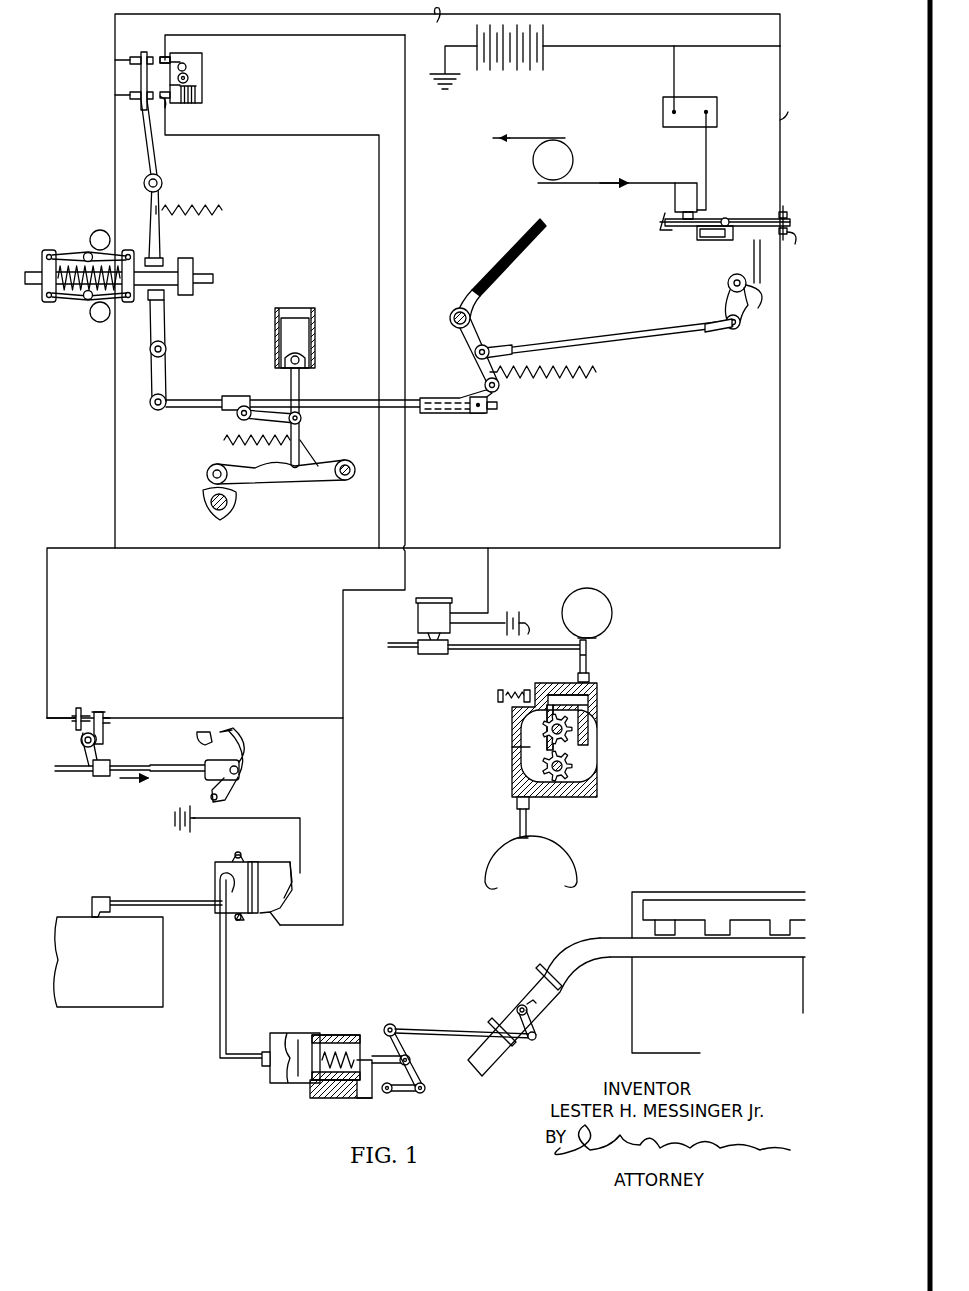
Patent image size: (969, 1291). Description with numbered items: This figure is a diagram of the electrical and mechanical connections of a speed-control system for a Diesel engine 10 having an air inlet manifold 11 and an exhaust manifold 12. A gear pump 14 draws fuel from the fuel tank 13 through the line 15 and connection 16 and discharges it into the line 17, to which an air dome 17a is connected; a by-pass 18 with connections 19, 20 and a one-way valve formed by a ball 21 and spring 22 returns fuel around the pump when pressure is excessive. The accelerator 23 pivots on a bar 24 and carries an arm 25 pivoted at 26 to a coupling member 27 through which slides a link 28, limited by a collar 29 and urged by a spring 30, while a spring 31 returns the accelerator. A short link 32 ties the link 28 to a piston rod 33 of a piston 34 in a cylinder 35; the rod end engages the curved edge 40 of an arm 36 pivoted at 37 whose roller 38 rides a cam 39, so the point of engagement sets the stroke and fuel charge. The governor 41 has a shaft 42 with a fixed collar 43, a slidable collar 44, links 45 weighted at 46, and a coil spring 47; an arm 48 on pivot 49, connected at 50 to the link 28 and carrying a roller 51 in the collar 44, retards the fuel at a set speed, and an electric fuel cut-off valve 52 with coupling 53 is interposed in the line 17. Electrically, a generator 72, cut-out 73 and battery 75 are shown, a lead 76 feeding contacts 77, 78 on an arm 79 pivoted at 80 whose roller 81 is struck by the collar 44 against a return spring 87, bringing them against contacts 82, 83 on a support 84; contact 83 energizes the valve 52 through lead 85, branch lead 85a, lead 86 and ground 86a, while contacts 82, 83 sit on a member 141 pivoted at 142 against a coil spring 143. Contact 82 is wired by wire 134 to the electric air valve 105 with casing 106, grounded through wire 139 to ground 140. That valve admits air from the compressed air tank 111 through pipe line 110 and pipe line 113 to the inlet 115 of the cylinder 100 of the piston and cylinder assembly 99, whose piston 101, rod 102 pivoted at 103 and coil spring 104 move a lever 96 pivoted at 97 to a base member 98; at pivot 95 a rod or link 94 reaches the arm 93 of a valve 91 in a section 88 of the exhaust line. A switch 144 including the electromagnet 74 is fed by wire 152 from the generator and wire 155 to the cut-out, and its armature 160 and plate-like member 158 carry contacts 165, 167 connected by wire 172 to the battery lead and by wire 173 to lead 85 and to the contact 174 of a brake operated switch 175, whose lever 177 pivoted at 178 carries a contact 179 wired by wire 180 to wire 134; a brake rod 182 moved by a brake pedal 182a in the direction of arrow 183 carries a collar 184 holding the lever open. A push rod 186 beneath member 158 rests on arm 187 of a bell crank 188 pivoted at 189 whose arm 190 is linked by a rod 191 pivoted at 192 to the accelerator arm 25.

The Diesel engine 10 is at (736, 888).
The air inlet manifold 11 is at (680, 906).
The exhaust manifold 12 is at (695, 948).
The fuel tank 13 is at (482, 868).
The gear pump 14 is at (605, 763).
The line 15 is at (515, 790).
The connection 16 is at (513, 750).
The line 17 is at (470, 651).
The air dome 17a is at (612, 613).
The by-pass 18 is at (495, 698).
The connection 19 is at (545, 690).
The connection 20 is at (515, 728).
The ball 21 is at (520, 688).
The spring 22 is at (524, 703).
The accelerator 23 is at (530, 228).
The bar 24 is at (470, 315).
The arm 25 is at (470, 337).
The pivotal connection 26 is at (500, 388).
The coupling member 27 is at (445, 400).
The link 28 is at (360, 402).
The collar 29 is at (478, 413).
The spring 30 is at (222, 440).
The spring 31 is at (596, 372).
The short link 32 is at (262, 412).
The piston rod 33 is at (300, 385).
The piston 34 is at (300, 338).
The cylinder 35 is at (315, 318).
The arm 36 is at (310, 480).
The pivot 37 is at (342, 480).
The roller 38 is at (207, 474).
The cam 39 is at (224, 518).
The curved edge 40 is at (318, 466).
The governor 41 is at (70, 212).
The shaft 42 is at (35, 285).
The collar 43 is at (44, 252).
The collar 44 is at (190, 268).
The links 45 is at (70, 254).
The weights 46 is at (102, 233).
The coil spring 47 is at (80, 290).
The arm 48 is at (166, 330).
The pivot 49 is at (167, 350).
The pivotal connection 50 is at (150, 405).
The roller 51 is at (164, 295).
The fuel cut-off valve 52 is at (450, 592).
The coupling 53 is at (430, 652).
The generator 72 is at (568, 155).
The cut-out 73 is at (690, 102).
The electromagnet 74 is at (675, 200).
The battery 75 is at (470, 70).
The lead 76 is at (450, 22).
The contact 77 is at (150, 50).
The contact 78 is at (155, 105).
The arm 79 is at (148, 155).
The pivot 80 is at (162, 181).
The roller 81 is at (165, 260).
The contact 82 is at (165, 40).
The contact 83 is at (168, 120).
The support 84 is at (208, 83).
The lead 85 is at (285, 135).
The branch lead 85a is at (490, 590).
The lead 86 is at (510, 612).
The ground 86a is at (548, 631).
The return spring 87 is at (222, 210).
The section 88 is at (520, 986).
The valve 91 is at (518, 1007).
The arm 93 is at (537, 1022).
The rod 94 is at (455, 1030).
The pivot 95 is at (394, 1026).
The lever 96 is at (410, 1052).
The pivot 97 is at (425, 1088).
The base member 98 is at (335, 1100).
The piston and cylinder assembly 99 is at (296, 1104).
The cylinder 100 is at (278, 1033).
The piston 101 is at (300, 1040).
The rod 102 is at (395, 1030).
The pivotal connection 103 is at (412, 1062).
The coil spring 104 is at (322, 1097).
The electric air valve 105 is at (296, 872).
The casing 106 is at (265, 868).
The pipe line 110 is at (140, 901).
The compressed air tank 111 is at (90, 998).
The pipe line 113 is at (226, 980).
The inlet 115 is at (262, 1062).
The wire 134 is at (405, 80).
The wire 139 is at (292, 815).
The ground 140 is at (170, 820).
The member 141 is at (180, 60).
The pivot 142 is at (186, 76).
The coil spring 143 is at (192, 104).
The switch 144 is at (744, 207).
The wire 152 is at (636, 179).
The wire 155 is at (706, 145).
The plate-like member 158 is at (705, 240).
The armature 160 is at (665, 224).
The contact 165 is at (785, 212).
The contact member 167 is at (807, 249).
The wire 172 is at (802, 110).
The wire 173 is at (780, 447).
The contact 174 is at (76, 724).
The brake operated switch 175 is at (110, 700).
The lever 177 is at (80, 755).
The pivot 178 is at (95, 742).
The contact 179 is at (105, 716).
The wire 180 is at (193, 718).
The brake rod 182 is at (168, 765).
The brake pedal 182a is at (258, 742).
The arrow 183 is at (130, 783).
The collar 184 is at (96, 777).
The push rod 186 is at (752, 262).
The arm 187 is at (752, 296).
The bell crank 188 is at (726, 310).
The pivot 189 is at (728, 283).
The arm 190 is at (741, 322).
The rod 191 is at (665, 330).
The pivotal connection 192 is at (490, 349).